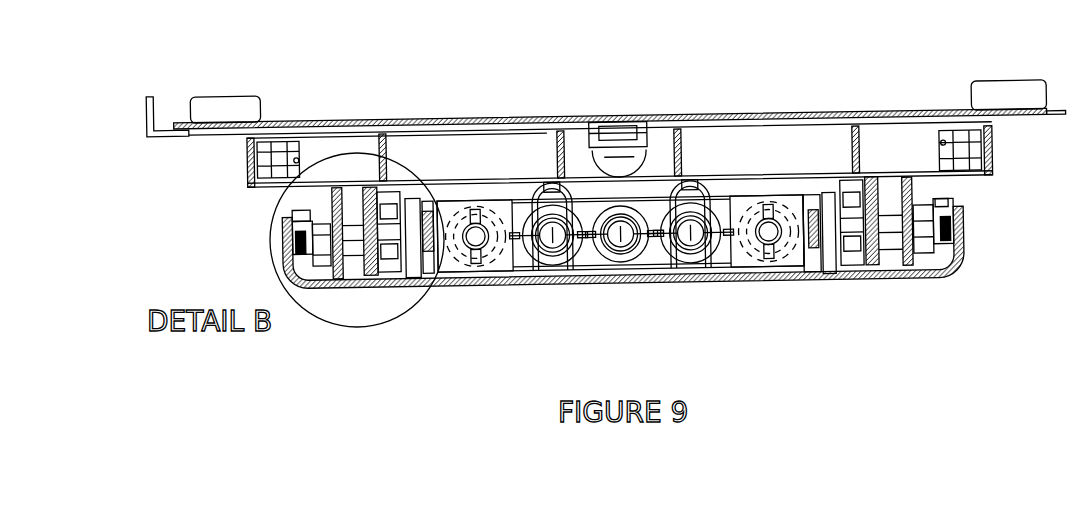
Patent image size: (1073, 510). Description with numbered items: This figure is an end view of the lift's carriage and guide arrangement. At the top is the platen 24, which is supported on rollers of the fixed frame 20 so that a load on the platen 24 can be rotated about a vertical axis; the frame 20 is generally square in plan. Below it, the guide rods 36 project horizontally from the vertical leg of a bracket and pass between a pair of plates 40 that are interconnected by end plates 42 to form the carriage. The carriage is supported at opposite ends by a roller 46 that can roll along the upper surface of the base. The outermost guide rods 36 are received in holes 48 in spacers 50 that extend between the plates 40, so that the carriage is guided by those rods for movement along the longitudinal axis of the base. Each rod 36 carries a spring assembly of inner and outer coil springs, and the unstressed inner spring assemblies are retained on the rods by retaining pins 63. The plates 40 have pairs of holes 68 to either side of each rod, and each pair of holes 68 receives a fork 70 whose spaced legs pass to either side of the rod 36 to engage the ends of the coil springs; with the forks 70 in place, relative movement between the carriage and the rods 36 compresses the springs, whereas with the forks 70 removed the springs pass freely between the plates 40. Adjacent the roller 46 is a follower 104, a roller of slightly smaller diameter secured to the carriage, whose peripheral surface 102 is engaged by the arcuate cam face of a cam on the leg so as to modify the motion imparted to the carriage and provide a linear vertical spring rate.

The fixed frame 20 is at (230, 160).
The platen 24 is at (574, 111).
The guide rods 36 is at (553, 264).
The plates 40 is at (723, 196).
The end plates 42 is at (427, 278).
The roller 46 is at (405, 280).
The holes 48 is at (458, 208).
The spacers 50 is at (505, 206).
The retaining pins 63 is at (660, 268).
The holes 68 is at (544, 268).
The fork 70 is at (548, 197).
The peripheral surface 102 is at (378, 180).
The follower 104 is at (387, 278).